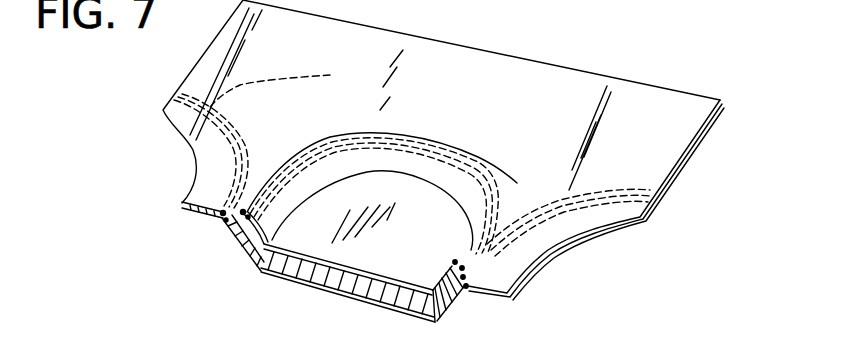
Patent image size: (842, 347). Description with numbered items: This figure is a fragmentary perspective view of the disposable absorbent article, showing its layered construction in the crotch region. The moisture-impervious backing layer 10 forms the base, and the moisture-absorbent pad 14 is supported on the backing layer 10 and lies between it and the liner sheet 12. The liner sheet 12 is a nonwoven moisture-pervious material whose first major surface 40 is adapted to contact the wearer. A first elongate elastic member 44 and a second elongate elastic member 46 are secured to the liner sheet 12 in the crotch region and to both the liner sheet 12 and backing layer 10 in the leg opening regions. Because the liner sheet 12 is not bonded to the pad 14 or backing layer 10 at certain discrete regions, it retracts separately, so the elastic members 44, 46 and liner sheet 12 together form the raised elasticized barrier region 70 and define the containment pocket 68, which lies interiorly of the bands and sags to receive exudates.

The backing layer 10 is at (377, 303).
The liner sheet 12 is at (588, 97).
The moisture-absorbent pad 14 is at (313, 267).
The first major surface 40 is at (613, 143).
The first elongate elastic member 44 is at (171, 101).
The second elongate elastic member 46 is at (330, 75).
The containment pocket 68 is at (367, 183).
The raised elasticized barrier region 70 is at (476, 248).